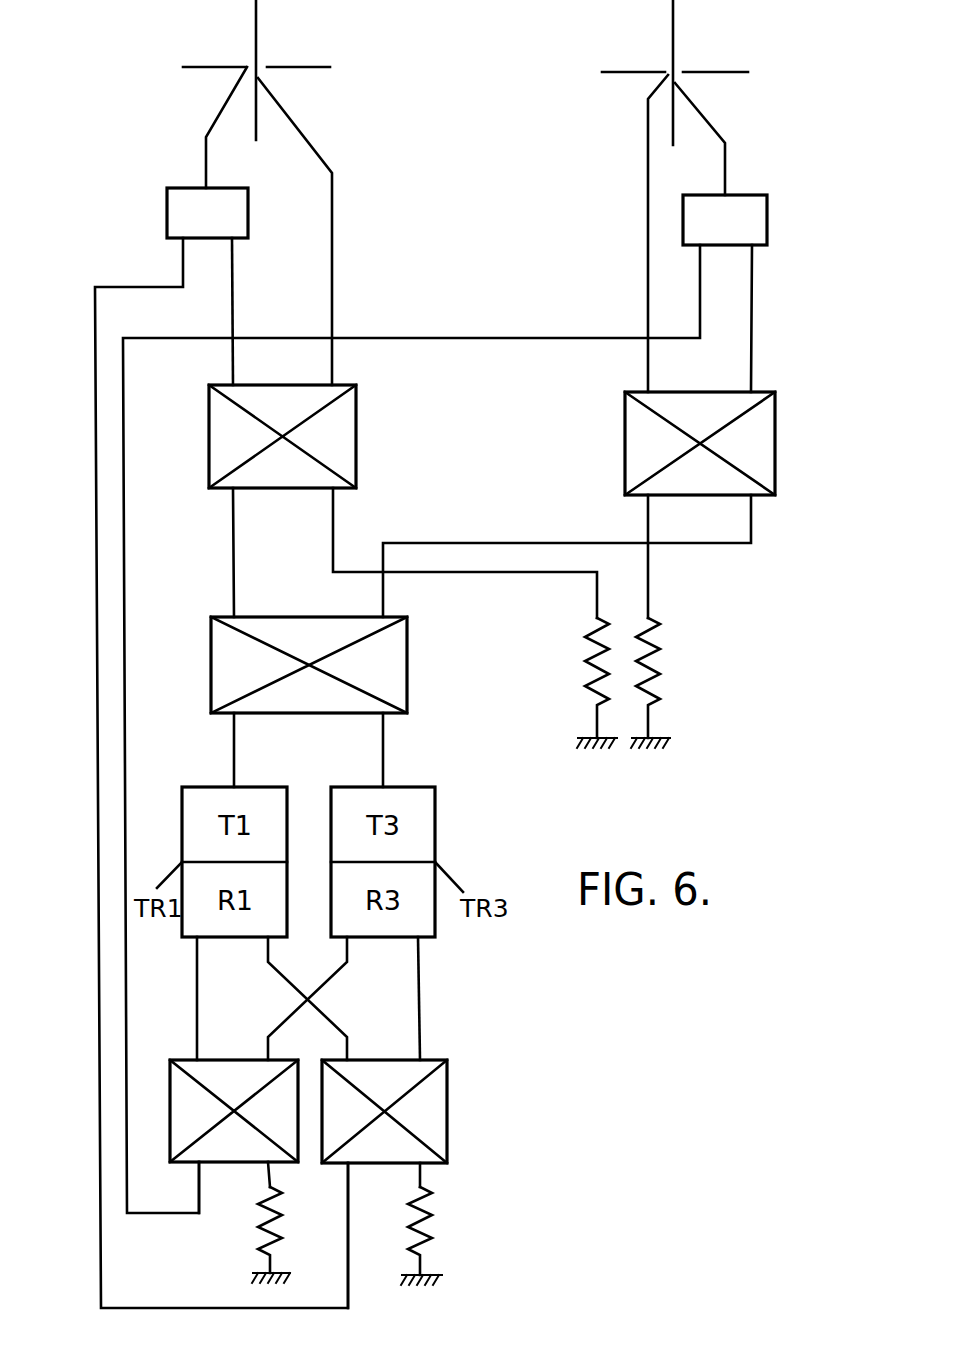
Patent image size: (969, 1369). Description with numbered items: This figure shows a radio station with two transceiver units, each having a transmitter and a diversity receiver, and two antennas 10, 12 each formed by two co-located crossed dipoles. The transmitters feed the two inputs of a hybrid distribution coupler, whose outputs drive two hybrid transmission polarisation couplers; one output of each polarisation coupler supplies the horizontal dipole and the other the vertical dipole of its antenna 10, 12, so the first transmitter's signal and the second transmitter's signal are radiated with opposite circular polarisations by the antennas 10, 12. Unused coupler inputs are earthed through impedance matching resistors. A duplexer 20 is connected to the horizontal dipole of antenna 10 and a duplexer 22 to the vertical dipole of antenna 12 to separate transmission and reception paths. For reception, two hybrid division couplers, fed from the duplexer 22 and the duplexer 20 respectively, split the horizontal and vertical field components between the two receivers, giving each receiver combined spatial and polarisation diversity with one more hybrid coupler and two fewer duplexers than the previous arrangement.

The antenna 10 is at (232, 53).
The antenna 12 is at (697, 55).
The duplexer 20 is at (167, 207).
The duplexer 22 is at (767, 217).